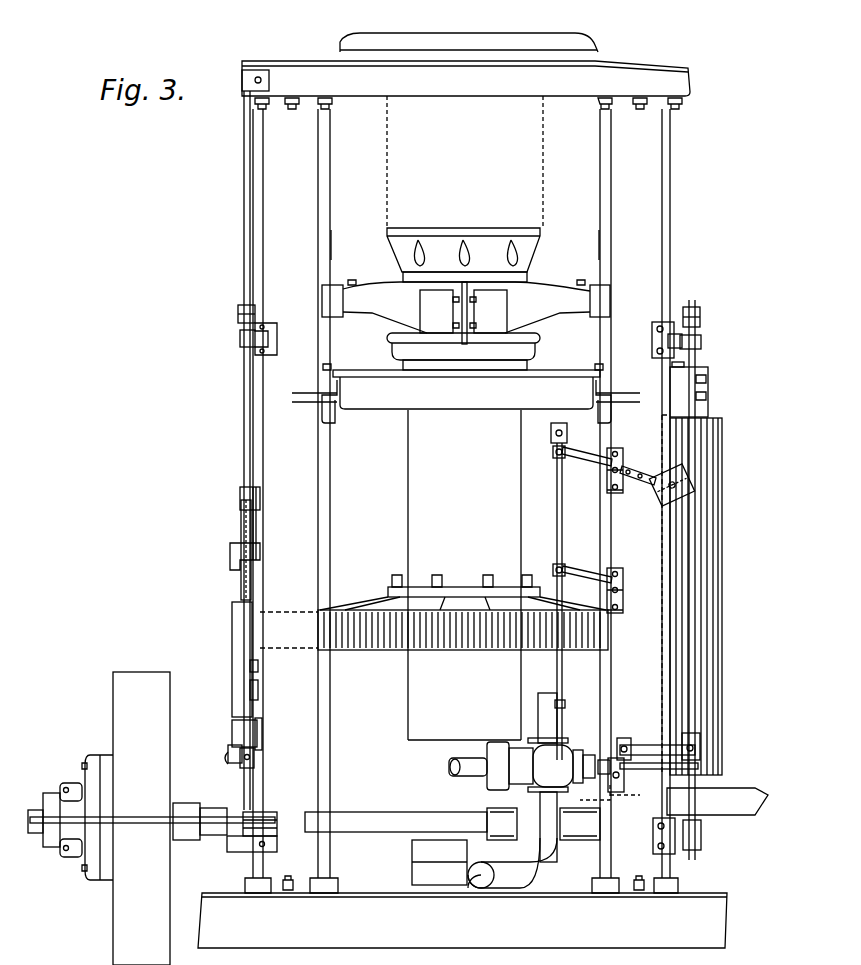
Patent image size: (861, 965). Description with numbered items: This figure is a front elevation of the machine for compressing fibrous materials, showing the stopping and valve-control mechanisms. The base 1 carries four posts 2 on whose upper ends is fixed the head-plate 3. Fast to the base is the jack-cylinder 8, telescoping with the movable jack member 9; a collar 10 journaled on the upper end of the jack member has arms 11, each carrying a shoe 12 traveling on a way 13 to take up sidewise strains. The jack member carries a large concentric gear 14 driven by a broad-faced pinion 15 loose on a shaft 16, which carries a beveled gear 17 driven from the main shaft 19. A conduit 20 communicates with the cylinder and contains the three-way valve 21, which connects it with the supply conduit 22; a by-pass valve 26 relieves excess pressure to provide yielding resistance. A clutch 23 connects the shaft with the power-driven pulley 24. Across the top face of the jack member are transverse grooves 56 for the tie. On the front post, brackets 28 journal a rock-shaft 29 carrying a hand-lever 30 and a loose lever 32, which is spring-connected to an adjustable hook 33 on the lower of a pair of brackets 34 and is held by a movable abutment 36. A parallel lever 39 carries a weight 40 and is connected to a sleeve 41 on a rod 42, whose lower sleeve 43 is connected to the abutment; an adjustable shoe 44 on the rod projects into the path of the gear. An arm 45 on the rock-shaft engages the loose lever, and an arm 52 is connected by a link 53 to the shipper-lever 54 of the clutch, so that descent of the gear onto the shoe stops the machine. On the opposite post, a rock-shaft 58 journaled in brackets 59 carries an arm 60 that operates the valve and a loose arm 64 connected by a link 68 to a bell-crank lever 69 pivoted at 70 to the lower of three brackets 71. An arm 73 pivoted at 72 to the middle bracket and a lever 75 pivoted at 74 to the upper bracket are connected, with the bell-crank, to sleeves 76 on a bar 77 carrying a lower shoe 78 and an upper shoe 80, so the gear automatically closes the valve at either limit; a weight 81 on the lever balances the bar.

The base 1 is at (462, 920).
The standards or posts 2 is at (461, 501).
The head-plate 3 is at (466, 71).
The jack-cylinder 8 is at (439, 862).
The movable jack member 9 is at (466, 552).
The collar 10 is at (466, 326).
The arms 11 is at (466, 311).
The shoe 12 is at (322, 298).
The way 13 is at (333, 248).
The concentric gear 14 is at (348, 606).
The broad-faced pinion 15 is at (724, 433).
The shaft 16 is at (700, 374).
The beveled gear 17 is at (770, 800).
The main shaft 19 is at (360, 812).
The conduit 20 is at (497, 890).
The three-way valve 21 is at (510, 750).
The conduit 22 is at (538, 703).
The clutch 23 is at (85, 775).
The power-driven pulley 24 is at (141, 818).
The valve 26 is at (579, 755).
The brackets 28 is at (240, 340).
The rock-shaft 29 is at (244, 398).
The hand-lever 30 is at (238, 315).
The lever 32 is at (229, 746).
The adjustable hook 33 is at (230, 764).
The brackets 34 is at (261, 556).
The movable abutment 36 is at (232, 725).
The parallel lever 39 is at (241, 520).
The weight 40 is at (232, 628).
The sleeve 41 is at (261, 497).
The rod 42 is at (257, 526).
The sleeve 43 is at (259, 692).
The adjustable shoe 44 is at (259, 668).
The arm 45 is at (252, 769).
The arm 52 is at (277, 826).
The link 53 is at (140, 818).
The shipper-lever 54 is at (42, 835).
The transverse grooves 56 is at (466, 240).
The rock-shaft 58 is at (700, 539).
The brackets 59 is at (701, 342).
The arm 60 is at (699, 767).
The arm 64 is at (701, 746).
The link 68 is at (657, 736).
The bell-crank lever 69 is at (626, 740).
The pivot 70 is at (608, 786).
The brackets 71 is at (623, 491).
The pivot 72 is at (624, 577).
The arm 73 is at (583, 576).
The pivot 74 is at (623, 468).
The lever 75 is at (586, 457).
The sleeves 76 is at (553, 456).
The bar 77 is at (563, 675).
The shoe 78 is at (562, 738).
The shoe 80 is at (551, 433).
The weight 81 is at (690, 481).